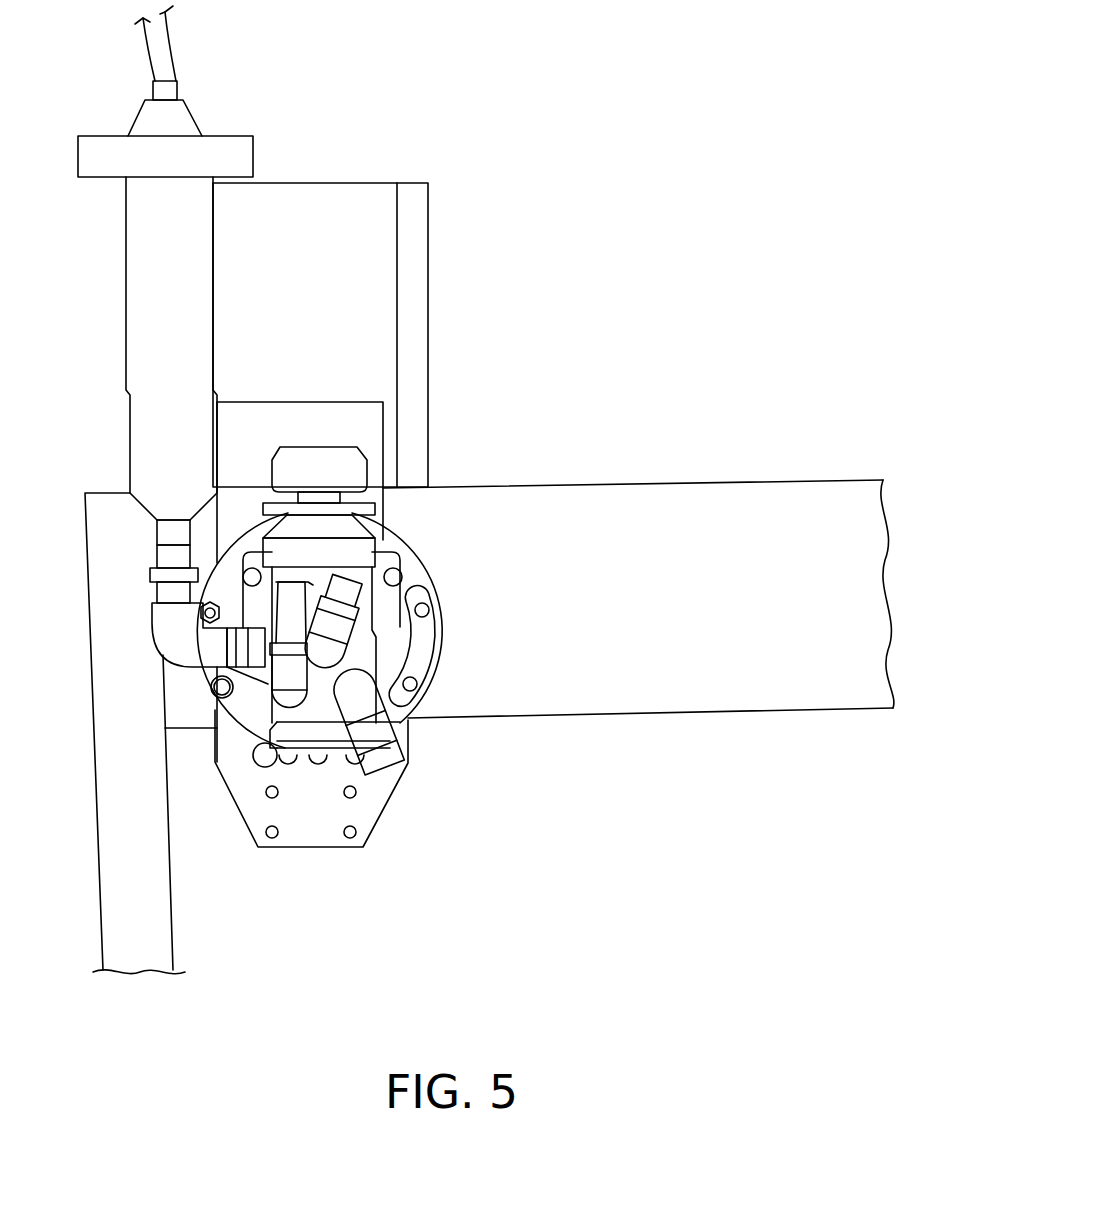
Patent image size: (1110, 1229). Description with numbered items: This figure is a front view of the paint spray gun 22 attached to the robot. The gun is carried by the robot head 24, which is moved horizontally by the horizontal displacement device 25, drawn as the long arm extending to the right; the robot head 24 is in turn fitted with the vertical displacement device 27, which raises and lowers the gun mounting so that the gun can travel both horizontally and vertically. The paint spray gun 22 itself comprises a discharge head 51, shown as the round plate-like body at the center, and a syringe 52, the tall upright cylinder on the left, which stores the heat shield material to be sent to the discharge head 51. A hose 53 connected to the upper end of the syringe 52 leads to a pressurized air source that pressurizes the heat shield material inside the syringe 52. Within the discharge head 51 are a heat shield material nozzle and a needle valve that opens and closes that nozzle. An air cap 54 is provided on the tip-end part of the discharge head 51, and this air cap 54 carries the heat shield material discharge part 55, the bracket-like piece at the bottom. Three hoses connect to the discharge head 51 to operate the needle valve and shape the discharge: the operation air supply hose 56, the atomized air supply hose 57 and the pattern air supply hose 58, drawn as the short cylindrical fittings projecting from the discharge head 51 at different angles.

The paint spray gun 22 is at (413, 528).
The robot head 24 is at (341, 200).
The horizontal displacement device 25 is at (733, 487).
The vertical displacement device 27 is at (312, 418).
The discharge head 51 is at (422, 622).
The syringe 52 is at (153, 287).
The hose 53 is at (165, 53).
The air cap 54 is at (267, 728).
The heat shield material discharge part 55 is at (318, 762).
The operation air supply hose 56 is at (345, 597).
The atomized air supply hose 57 is at (290, 607).
The pattern air supply hose 58 is at (382, 760).